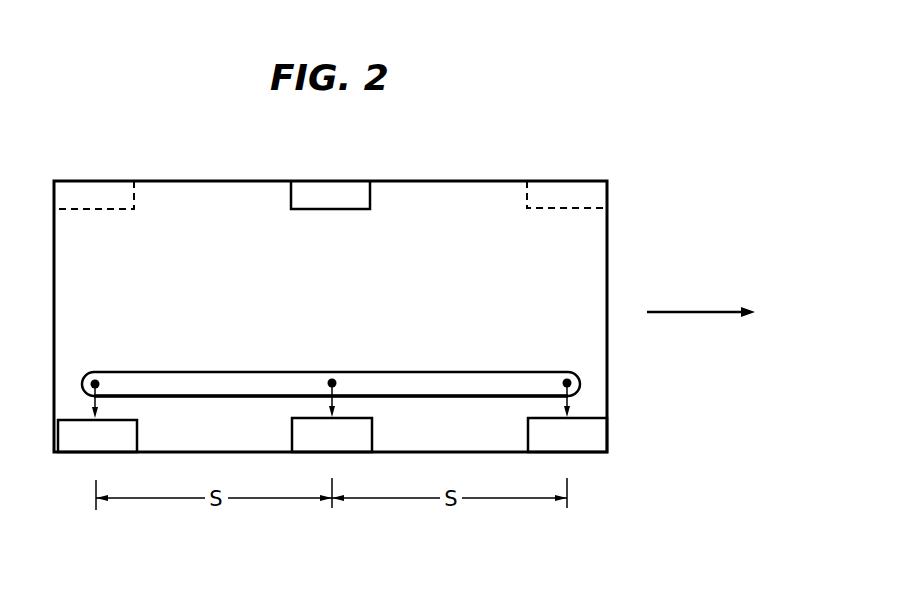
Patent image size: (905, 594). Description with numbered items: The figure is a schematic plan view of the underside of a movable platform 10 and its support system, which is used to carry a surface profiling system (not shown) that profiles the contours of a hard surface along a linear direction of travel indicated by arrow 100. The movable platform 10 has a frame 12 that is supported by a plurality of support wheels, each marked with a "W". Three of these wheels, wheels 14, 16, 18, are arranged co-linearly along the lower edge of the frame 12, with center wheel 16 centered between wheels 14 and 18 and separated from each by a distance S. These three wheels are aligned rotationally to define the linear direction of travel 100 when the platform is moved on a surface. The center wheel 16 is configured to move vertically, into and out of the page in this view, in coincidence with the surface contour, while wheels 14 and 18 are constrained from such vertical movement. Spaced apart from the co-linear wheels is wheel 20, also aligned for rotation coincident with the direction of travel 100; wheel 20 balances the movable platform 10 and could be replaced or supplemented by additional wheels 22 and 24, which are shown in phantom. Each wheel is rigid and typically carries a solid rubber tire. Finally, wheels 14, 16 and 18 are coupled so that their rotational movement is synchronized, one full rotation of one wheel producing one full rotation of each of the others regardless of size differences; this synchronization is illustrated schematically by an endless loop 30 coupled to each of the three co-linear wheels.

The movable platform 10 is at (660, 122).
The frame 12 is at (608, 241).
The wheel 14 is at (592, 443).
The center wheel 16 is at (355, 444).
The wheel 18 is at (118, 444).
The wheel 20 is at (352, 188).
The wheel 22 is at (590, 185).
The wheel 24 is at (116, 188).
The endless loop 30 is at (329, 370).
The arrow 100 is at (695, 312).